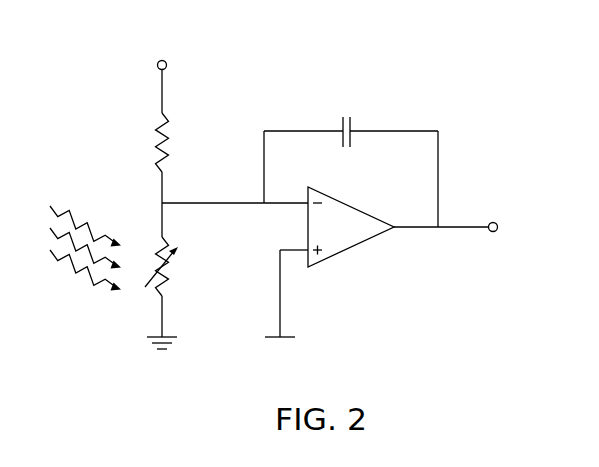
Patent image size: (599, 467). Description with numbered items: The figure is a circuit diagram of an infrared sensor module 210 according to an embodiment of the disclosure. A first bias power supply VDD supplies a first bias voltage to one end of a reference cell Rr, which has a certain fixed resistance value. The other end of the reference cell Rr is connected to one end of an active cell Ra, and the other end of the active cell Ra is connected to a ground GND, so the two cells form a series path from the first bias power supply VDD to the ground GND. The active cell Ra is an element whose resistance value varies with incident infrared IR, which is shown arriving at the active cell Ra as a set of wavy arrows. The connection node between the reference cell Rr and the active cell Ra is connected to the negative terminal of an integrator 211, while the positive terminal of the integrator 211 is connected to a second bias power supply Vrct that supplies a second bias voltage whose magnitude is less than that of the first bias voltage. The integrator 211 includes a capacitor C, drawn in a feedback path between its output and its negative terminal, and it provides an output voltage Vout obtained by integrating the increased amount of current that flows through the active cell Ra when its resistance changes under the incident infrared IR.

The infrared sensor module 210 is at (375, 26).
The integrator 211 is at (356, 237).
The first bias power supply VDD is at (162, 77).
The reference cell Rr is at (176, 142).
The active cell Ra is at (170, 266).
The ground GND is at (183, 339).
The incident infrared IR is at (85, 239).
The capacitor C is at (345, 121).
The second bias power supply Vrct is at (296, 298).
The output voltage Vout is at (466, 227).